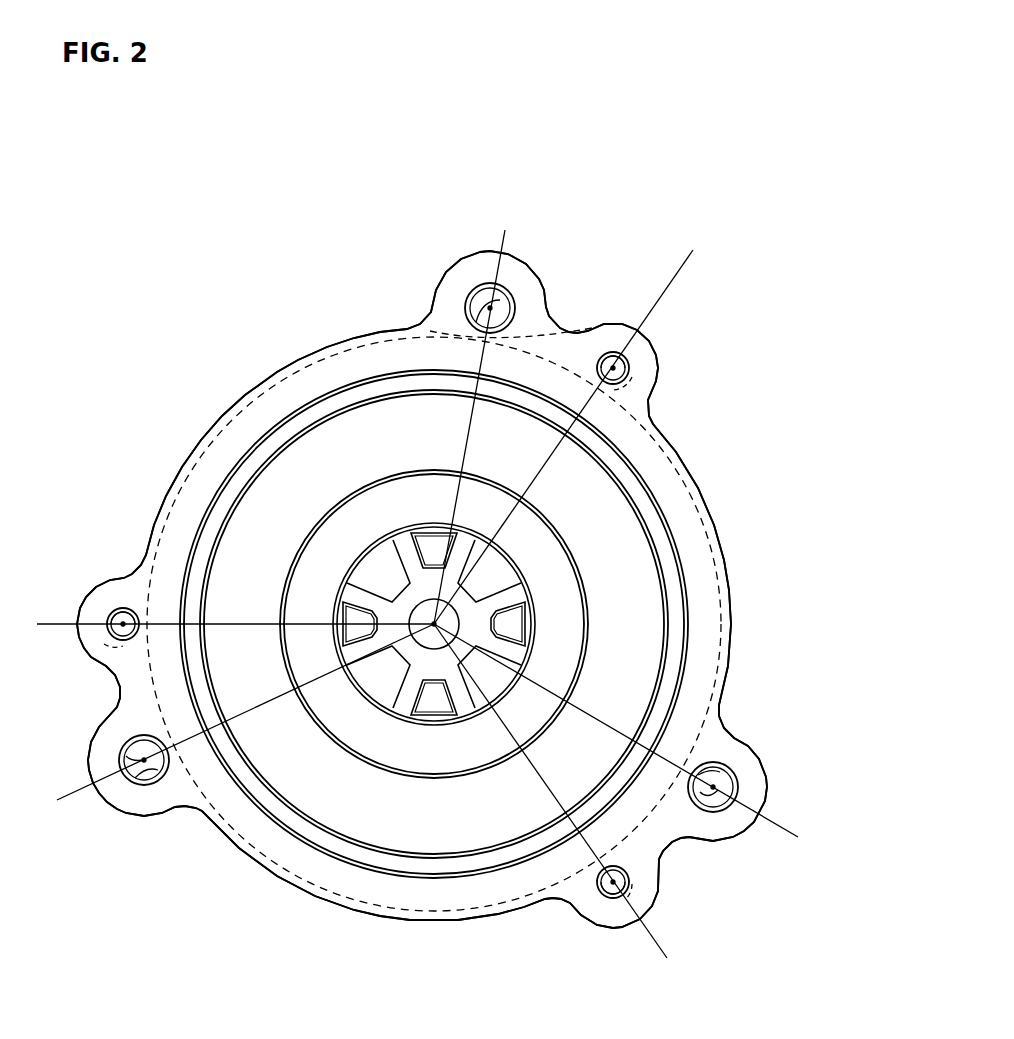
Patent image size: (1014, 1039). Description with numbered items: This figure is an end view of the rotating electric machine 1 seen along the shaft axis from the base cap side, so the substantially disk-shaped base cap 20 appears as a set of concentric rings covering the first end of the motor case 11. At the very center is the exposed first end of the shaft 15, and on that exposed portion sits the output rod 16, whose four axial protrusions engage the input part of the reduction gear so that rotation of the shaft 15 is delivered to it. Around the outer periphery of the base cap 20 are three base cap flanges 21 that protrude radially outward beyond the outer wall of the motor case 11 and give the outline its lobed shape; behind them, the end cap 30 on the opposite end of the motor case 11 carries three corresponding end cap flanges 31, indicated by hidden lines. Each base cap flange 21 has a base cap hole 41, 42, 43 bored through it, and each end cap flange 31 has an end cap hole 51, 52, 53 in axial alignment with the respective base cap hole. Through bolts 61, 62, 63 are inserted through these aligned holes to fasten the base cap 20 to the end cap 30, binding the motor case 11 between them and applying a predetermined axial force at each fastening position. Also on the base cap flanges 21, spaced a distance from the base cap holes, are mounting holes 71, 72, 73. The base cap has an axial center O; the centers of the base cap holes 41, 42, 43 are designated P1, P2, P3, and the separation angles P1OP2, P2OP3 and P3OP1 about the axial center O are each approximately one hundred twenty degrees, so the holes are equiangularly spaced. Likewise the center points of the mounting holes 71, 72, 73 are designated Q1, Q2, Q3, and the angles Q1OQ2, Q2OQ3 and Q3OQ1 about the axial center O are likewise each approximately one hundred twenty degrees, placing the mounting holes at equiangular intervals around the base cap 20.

The rotating electric machine 1 is at (290, 202).
The motor case 11 is at (200, 437).
The shaft 15 is at (437, 648).
The output rod 16 is at (403, 703).
The base cap 20 is at (453, 897).
The base cap flanges 21 is at (560, 322).
The end cap 30 is at (243, 398).
The end cap flanges 31 is at (662, 363).
The base cap hole 41 is at (110, 617).
The base cap hole 42 is at (612, 352).
The base cap hole 43 is at (600, 887).
The end cap hole 51 is at (104, 664).
The end cap hole 52 is at (632, 377).
The end cap hole 53 is at (632, 884).
The through bolt 61 is at (122, 608).
The through bolt 62 is at (626, 363).
The through bolt 63 is at (607, 894).
The mounting hole 71 is at (132, 782).
The mounting hole 72 is at (484, 306).
The mounting hole 73 is at (722, 768).
The axial center O is at (433, 620).
The center of base cap hole P1 is at (118, 626).
The center of base cap hole P2 is at (616, 365).
The center of base cap hole P3 is at (613, 888).
The center point of mounting hole Q1 is at (140, 758).
The center point of mounting hole Q2 is at (495, 305).
The center point of mounting hole Q3 is at (716, 785).